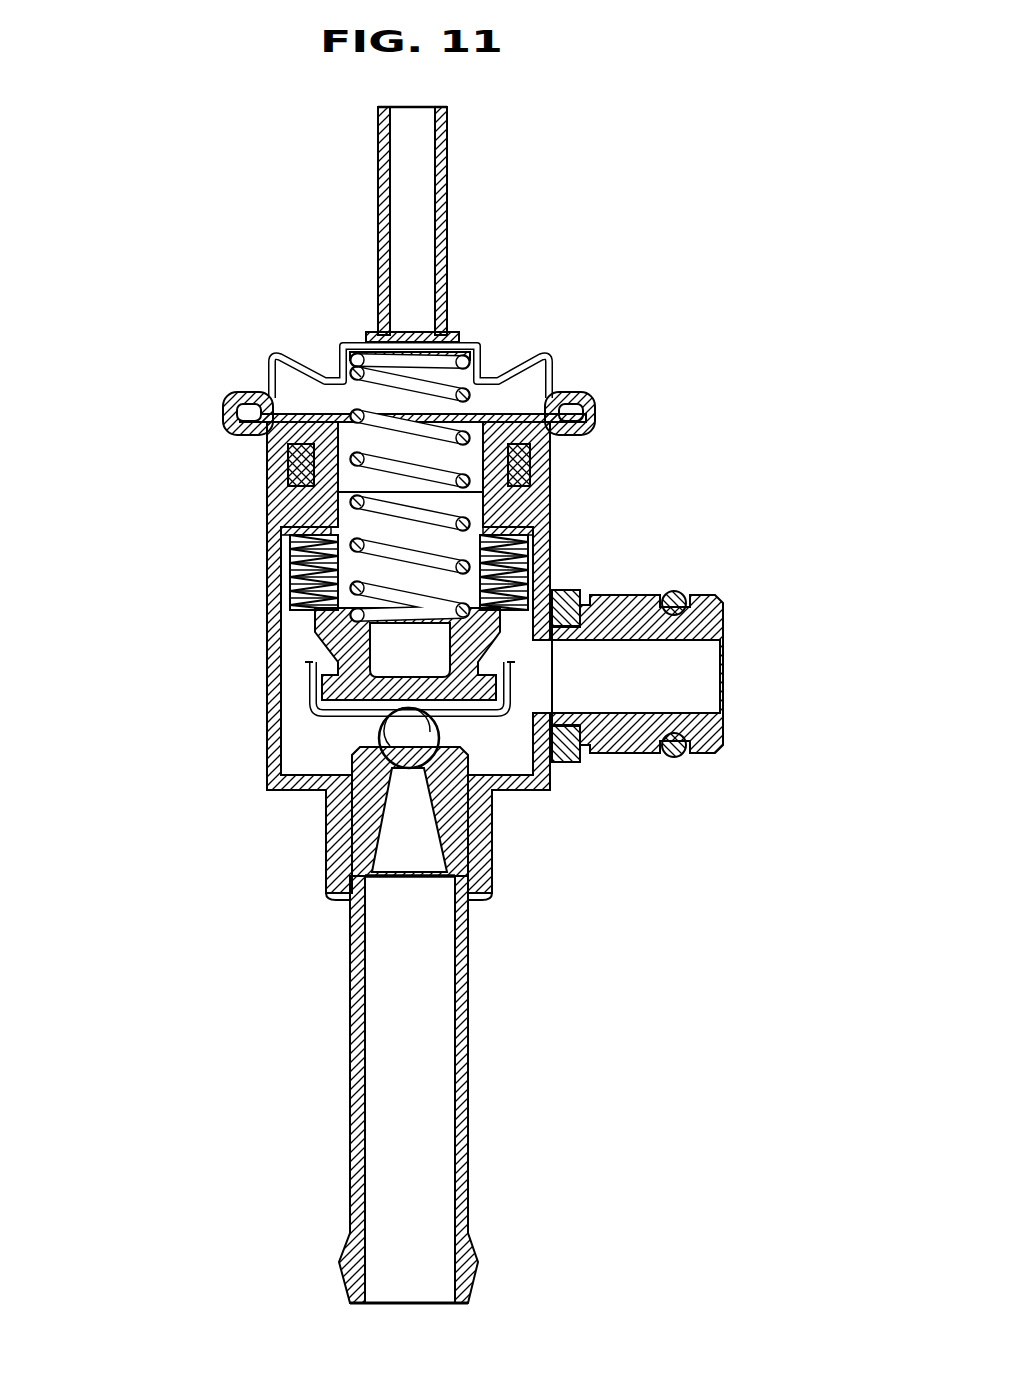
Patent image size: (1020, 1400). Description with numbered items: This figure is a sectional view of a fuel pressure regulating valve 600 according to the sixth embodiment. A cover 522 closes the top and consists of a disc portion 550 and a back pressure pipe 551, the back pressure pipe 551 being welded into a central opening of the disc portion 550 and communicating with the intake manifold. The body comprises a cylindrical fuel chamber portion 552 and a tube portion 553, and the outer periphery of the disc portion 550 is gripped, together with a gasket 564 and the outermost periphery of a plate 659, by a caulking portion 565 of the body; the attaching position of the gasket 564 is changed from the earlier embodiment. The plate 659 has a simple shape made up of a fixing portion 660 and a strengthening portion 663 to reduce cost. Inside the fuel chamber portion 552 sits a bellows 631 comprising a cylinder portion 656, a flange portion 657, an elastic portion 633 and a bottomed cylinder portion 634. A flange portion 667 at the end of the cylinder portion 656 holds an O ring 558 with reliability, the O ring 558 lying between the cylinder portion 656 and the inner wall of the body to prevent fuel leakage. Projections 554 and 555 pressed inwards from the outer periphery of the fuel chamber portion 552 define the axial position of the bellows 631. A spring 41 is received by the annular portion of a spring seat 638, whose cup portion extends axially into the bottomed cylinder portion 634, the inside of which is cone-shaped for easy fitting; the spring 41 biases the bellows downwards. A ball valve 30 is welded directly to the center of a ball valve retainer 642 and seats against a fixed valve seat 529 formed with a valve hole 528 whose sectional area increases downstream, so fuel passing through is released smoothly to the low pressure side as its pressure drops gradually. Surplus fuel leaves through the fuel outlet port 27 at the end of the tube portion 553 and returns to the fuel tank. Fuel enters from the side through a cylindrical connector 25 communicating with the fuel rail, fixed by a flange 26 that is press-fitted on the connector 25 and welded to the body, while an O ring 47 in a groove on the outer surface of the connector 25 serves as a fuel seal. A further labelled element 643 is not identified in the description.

The pressure regulator 600 is at (195, 255).
The back pressure pipe 551 is at (447, 188).
The cover 522 is at (480, 318).
The spring 41 is at (347, 342).
The disc portion 550 is at (543, 352).
The caulking portion 565 is at (242, 392).
The gasket 564 is at (232, 398).
The fixing portion 660 is at (556, 447).
The strengthening portion 663 is at (560, 483).
The plate 659 is at (690, 405).
The flange portion 667 is at (268, 444).
The O ring 558 is at (268, 465).
The cylinder portion 656 is at (270, 522).
The flange portion 657 is at (270, 530).
The projection 555 is at (270, 550).
The projection 554 is at (545, 532).
The elastic portion 633 is at (270, 600).
The bellows 631 is at (300, 632).
The flange 643 is at (300, 673).
The bottomed cylinder portion 634 is at (296, 700).
The fuel chamber portion 552 is at (266, 748).
The ball valve retainer 642 is at (300, 760).
The spring seat 638 is at (325, 795).
The ball valve 30 is at (330, 815).
The fixed valve seat 529 is at (468, 828).
The valve hole 528 is at (407, 866).
The tube portion 553 is at (350, 1080).
The fuel outlet port 27 is at (405, 1305).
The O ring 47 is at (675, 590).
The connector 25 is at (725, 612).
The flange 26 is at (586, 760).